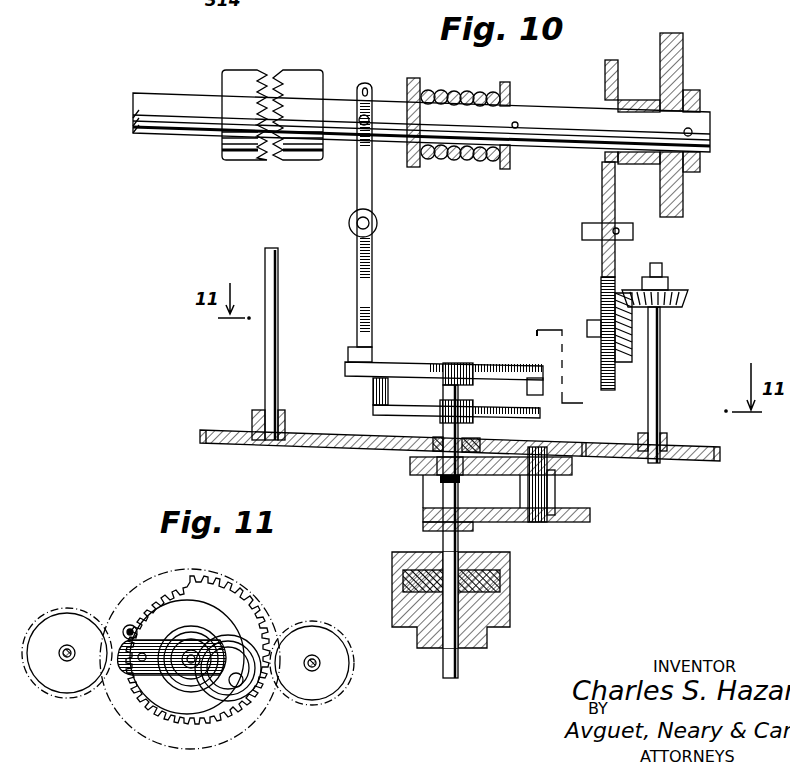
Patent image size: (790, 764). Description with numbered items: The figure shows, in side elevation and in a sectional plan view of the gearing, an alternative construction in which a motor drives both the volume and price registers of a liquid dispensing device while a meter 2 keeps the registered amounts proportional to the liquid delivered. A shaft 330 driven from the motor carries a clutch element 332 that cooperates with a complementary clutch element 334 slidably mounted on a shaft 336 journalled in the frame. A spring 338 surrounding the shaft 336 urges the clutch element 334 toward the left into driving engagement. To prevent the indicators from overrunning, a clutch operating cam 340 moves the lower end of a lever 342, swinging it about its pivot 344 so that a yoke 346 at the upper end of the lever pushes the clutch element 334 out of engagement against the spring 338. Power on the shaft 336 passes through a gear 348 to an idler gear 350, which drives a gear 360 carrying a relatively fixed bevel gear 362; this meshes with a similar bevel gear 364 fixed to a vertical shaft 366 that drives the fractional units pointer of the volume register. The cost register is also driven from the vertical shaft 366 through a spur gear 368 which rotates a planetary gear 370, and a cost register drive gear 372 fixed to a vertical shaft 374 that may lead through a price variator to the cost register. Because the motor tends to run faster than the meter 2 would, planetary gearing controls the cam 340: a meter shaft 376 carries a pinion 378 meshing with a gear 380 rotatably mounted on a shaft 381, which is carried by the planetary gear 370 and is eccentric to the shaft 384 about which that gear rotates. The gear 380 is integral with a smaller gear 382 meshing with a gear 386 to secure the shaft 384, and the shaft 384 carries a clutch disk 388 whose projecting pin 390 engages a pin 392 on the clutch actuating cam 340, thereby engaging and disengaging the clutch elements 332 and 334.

In FIG. 10, the meter 2 is at (478, 651).
In FIG. 10, the shaft 330 is at (187, 80).
In FIG. 10, the clutch element 332 is at (244, 82).
In FIG. 10, the complementary clutch element 334 is at (306, 83).
In FIG. 10, the shaft 336 is at (563, 113).
In FIG. 10, the spring 338 is at (483, 90).
In FIG. 10, the clutch operating cam 340 is at (406, 367).
In FIG. 11, the clutch operating cam 340 is at (155, 645).
In FIG. 10, the lever 342 is at (358, 259).
In FIG. 11, the lever 342 is at (128, 640).
In FIG. 10, the pivot 344 is at (378, 222).
In FIG. 10, the yoke 346 is at (370, 118).
In FIG. 10, the gear 348 is at (619, 72).
In FIG. 10, the idler gear 350 is at (603, 213).
In FIG. 10, the gear 360 is at (600, 298).
In FIG. 10, the bevel gear 362 is at (633, 343).
In FIG. 10, the bevel gear 364 is at (627, 291).
In FIG. 10, the vertical shaft 366 is at (661, 376).
In FIG. 10, the spur gear 368 is at (699, 452).
In FIG. 11, the spur gear 368 is at (328, 690).
In FIG. 10, the planetary gear 370 is at (549, 446).
In FIG. 11, the planetary gear 370 is at (232, 608).
In FIG. 10, the cost register drive gear 372 is at (232, 447).
In FIG. 11, the cost register drive gear 372 is at (73, 623).
In FIG. 10, the vertical shaft 374 is at (265, 351).
In FIG. 10, the meter shaft 376 is at (462, 669).
In FIG. 10, the pinion 378 is at (472, 531).
In FIG. 10, the gear 380 is at (575, 524).
In FIG. 10, the shaft 381 is at (550, 491).
In FIG. 10, the gear 382 is at (588, 439).
In FIG. 10, the shaft 384 is at (446, 482).
In FIG. 10, the gear 386 is at (437, 468).
In FIG. 10, the clutch disk 388 is at (417, 410).
In FIG. 11, the clutch disk 388 is at (192, 608).
In FIG. 10, the pin 390 is at (372, 396).
In FIG. 10, the pin 392 is at (544, 387).
In FIG. 11, the pin 392 is at (252, 697).